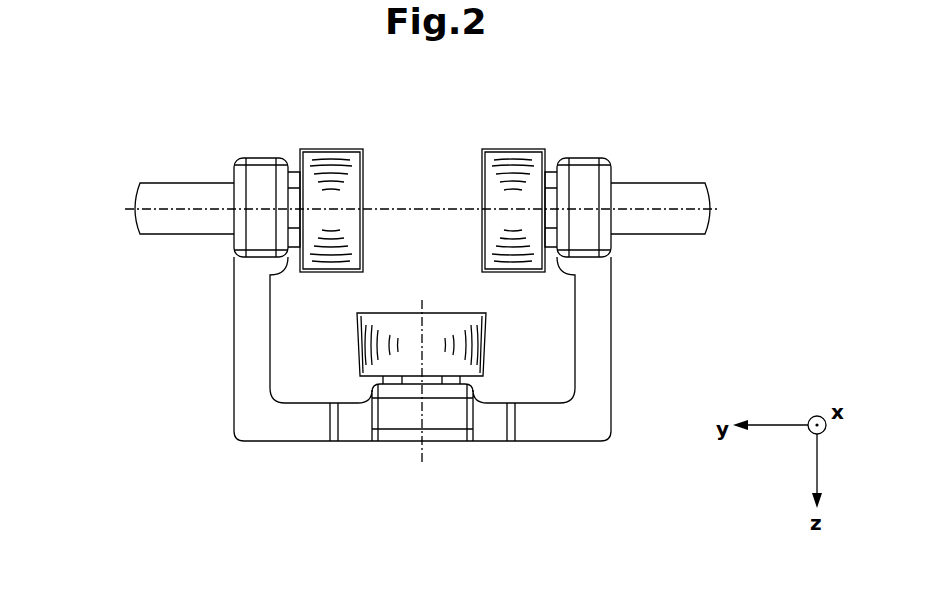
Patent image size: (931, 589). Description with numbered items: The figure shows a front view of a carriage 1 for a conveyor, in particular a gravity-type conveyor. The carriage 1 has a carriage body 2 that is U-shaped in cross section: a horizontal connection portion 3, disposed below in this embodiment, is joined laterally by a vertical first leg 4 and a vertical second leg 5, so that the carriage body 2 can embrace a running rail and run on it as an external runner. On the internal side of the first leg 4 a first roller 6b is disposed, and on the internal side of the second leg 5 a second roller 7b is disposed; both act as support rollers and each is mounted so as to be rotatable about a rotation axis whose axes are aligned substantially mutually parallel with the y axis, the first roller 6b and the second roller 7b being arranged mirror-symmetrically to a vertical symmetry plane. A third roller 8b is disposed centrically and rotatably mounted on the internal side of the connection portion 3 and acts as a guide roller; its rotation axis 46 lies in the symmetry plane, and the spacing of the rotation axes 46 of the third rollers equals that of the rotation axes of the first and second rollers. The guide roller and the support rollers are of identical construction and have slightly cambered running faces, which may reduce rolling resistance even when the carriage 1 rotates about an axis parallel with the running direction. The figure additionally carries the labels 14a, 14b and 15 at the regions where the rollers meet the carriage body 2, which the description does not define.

The carriage 1 is at (197, 104).
The carriage body 2 is at (697, 277).
The connection portion 3 is at (310, 425).
The first leg 4 is at (597, 333).
The second leg 5 is at (244, 336).
The first roller 6b is at (512, 158).
The second roller 7b is at (332, 158).
The third roller 8b is at (383, 342).
The bearing seat 14a is at (590, 266).
The bearing seat 14b is at (257, 266).
The bearing seat 15 is at (478, 400).
The rotation axis of third roller 46 is at (422, 458).